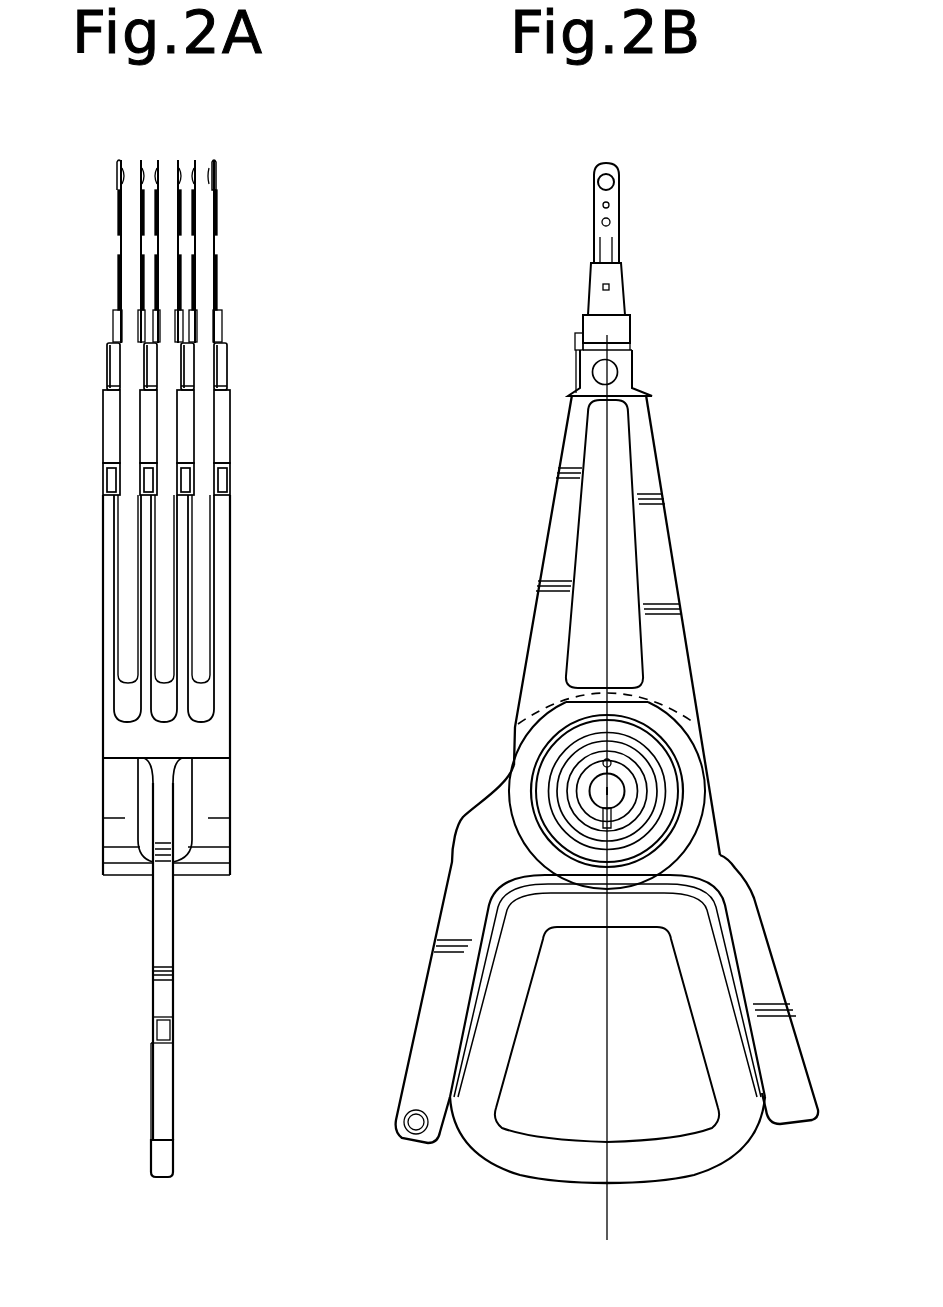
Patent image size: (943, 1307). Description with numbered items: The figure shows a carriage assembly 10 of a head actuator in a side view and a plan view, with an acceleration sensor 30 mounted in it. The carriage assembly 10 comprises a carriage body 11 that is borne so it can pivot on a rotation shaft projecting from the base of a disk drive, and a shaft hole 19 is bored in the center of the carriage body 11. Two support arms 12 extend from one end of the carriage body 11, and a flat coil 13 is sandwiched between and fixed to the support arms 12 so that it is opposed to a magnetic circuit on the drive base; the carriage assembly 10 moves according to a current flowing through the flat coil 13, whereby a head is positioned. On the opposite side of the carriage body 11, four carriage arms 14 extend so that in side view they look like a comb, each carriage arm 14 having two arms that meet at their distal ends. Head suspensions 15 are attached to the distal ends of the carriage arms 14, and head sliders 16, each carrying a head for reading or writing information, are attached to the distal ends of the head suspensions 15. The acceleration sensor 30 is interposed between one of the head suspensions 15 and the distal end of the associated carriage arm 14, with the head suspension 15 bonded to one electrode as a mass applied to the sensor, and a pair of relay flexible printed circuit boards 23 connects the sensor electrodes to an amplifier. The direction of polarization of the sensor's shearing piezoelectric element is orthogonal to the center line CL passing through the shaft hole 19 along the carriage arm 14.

In FIG. 2A, the carriage assembly 10 is at (276, 480).
In FIG. 2B, the carriage assembly 10 is at (692, 504).
In FIG. 2A, the carriage body 11 is at (212, 744).
In FIG. 2B, the carriage body 11 is at (704, 748).
In FIG. 2A, the support arms 12 is at (165, 945).
In FIG. 2B, the support arms 12 is at (757, 950).
In FIG. 2A, the flat coil 13 is at (172, 1152).
In FIG. 2B, the flat coil 13 is at (733, 1138).
In FIG. 2A, the carriage arms 14 is at (222, 548).
In FIG. 2B, the carriage arms 14 is at (672, 648).
In FIG. 2A, the head suspensions 15 is at (215, 240).
In FIG. 2B, the head suspensions 15 is at (619, 232).
In FIG. 2A, the head sliders 16 is at (205, 158).
In FIG. 2B, the head sliders 16 is at (619, 180).
In FIG. 2B, the shaft hole 19 is at (612, 785).
In FIG. 2B, the relay flexible printed circuit boards 23 is at (533, 608).
In FIG. 2B, the acceleration sensor 30 is at (583, 326).
In FIG. 2B, the center line CL is at (610, 572).